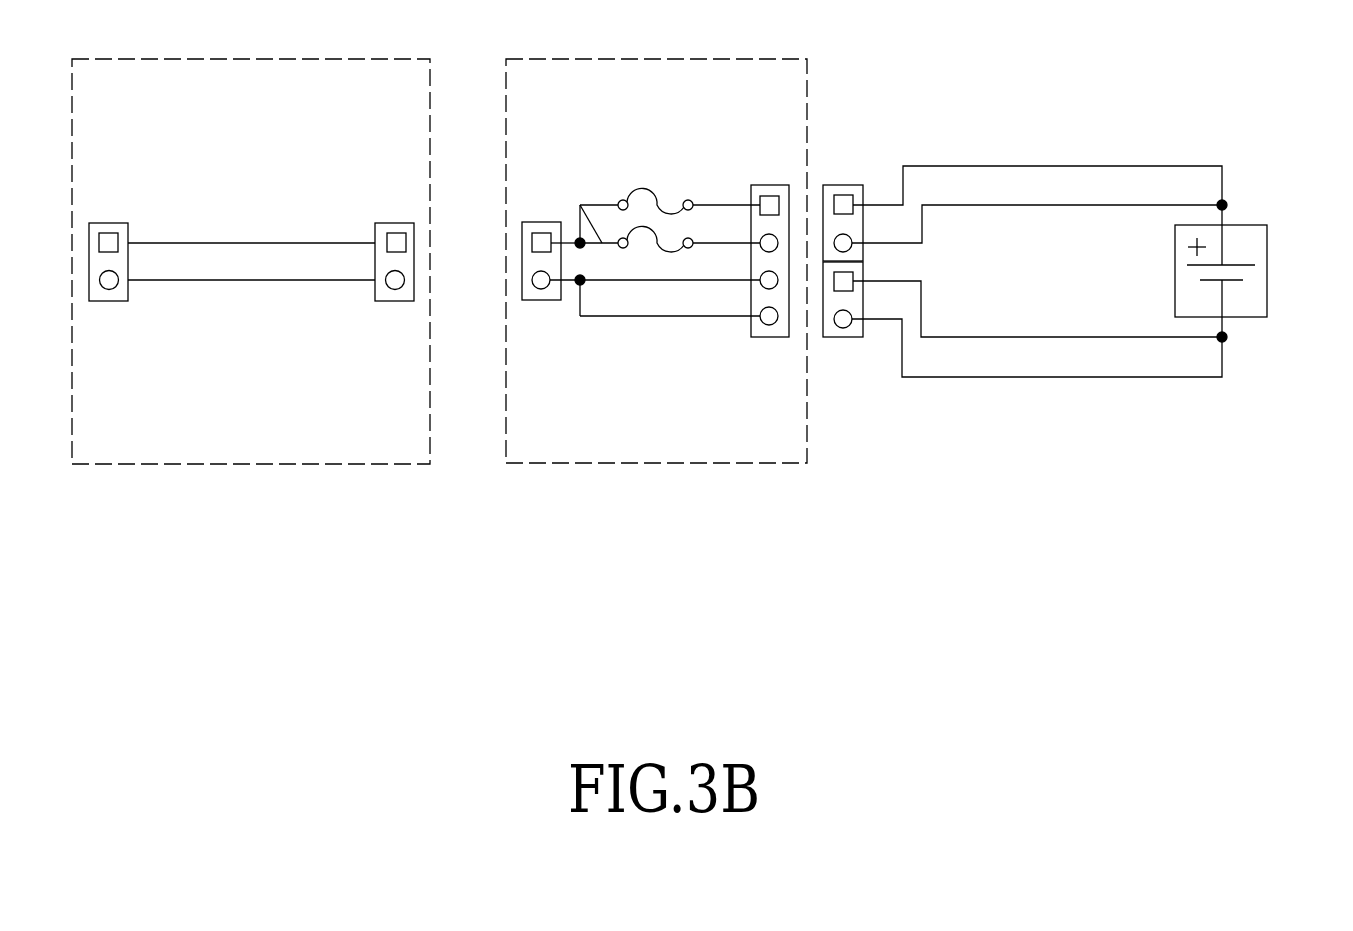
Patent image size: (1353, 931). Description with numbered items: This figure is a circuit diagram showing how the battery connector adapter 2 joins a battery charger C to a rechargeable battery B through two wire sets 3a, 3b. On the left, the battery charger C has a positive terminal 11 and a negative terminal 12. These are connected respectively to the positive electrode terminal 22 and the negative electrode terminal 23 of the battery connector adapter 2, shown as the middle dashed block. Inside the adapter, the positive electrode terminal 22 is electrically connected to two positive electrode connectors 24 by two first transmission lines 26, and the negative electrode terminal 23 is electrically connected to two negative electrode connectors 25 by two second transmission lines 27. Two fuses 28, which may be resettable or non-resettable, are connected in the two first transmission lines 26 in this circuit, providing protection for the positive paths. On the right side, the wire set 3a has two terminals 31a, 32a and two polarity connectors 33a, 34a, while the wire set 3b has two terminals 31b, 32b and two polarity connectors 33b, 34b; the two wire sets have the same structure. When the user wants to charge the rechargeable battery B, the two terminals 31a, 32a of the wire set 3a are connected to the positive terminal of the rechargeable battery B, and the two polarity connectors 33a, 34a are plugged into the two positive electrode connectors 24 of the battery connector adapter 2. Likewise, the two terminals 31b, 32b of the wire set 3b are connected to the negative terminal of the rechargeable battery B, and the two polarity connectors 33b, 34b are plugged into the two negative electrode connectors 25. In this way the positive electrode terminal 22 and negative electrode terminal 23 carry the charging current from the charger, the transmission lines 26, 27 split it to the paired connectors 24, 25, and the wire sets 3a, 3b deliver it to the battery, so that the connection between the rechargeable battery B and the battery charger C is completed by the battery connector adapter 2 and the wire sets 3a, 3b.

The battery charger C is at (282, 464).
The positive terminal 11 is at (393, 235).
The negative terminal 12 is at (393, 290).
The battery connector adapter 2 is at (689, 475).
The positive electrode terminal 22 is at (540, 243).
The negative electrode terminal 23 is at (539, 287).
The positive electrode connectors 24 is at (766, 236).
The negative electrode connectors 25 is at (765, 287).
The first transmission lines 26 is at (603, 243).
The second transmission lines 27 is at (642, 316).
The fuses 28 is at (642, 190).
The wire set 3a is at (1235, 150).
The wire set 3b is at (1217, 407).
The terminal 31a is at (1127, 166).
The terminal 32a is at (1186, 205).
The terminal 31b is at (1197, 337).
The terminal 32b is at (1105, 377).
The polarity connector 33a is at (846, 240).
The polarity connector 34a is at (843, 197).
The polarity connector 33b is at (842, 325).
The polarity connector 34b is at (849, 290).
The rechargeable battery B is at (1268, 253).